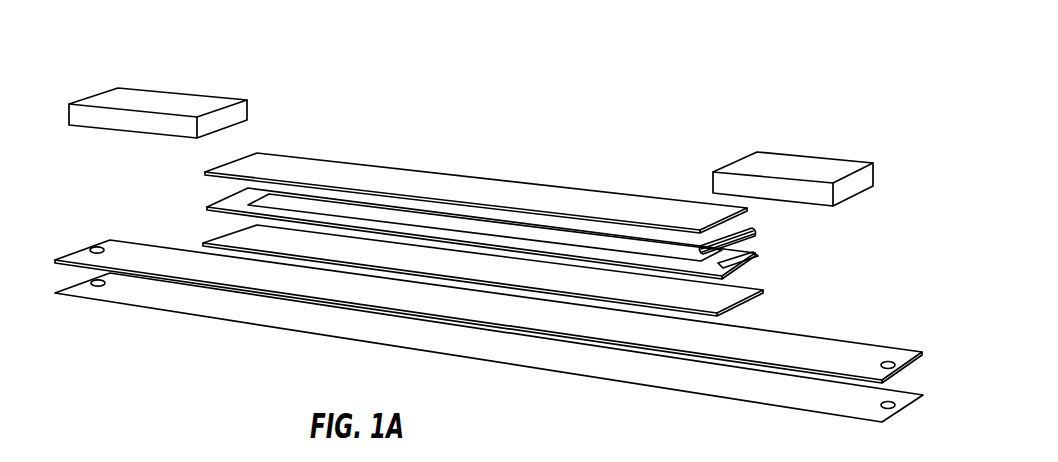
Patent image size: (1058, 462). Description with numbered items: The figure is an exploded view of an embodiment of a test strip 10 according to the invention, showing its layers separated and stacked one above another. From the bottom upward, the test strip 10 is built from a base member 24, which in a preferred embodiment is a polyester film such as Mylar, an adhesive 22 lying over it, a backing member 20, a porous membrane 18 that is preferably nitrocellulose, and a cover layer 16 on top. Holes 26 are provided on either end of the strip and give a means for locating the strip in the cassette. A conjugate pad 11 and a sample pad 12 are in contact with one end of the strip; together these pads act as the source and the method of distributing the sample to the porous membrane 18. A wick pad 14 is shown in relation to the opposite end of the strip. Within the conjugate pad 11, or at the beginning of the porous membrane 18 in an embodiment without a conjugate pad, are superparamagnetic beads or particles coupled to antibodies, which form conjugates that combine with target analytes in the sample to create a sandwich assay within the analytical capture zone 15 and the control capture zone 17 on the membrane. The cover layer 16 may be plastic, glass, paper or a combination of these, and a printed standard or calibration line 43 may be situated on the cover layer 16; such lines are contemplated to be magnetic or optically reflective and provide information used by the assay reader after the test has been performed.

The test strip 10 is at (657, 44).
The conjugate pad 11 is at (754, 239).
The sample pad 12 is at (773, 163).
The wick pad 14 is at (173, 103).
The analytical capture zone 15 is at (568, 253).
The cover layer 16 is at (443, 185).
The control capture zone 17 is at (320, 222).
The porous membrane 18 is at (745, 255).
The backing member 20 is at (720, 298).
The adhesive 22 is at (497, 279).
The base member 24 is at (803, 395).
The holes 26 is at (95, 250).
The printed standard or calibration line 43 is at (241, 208).